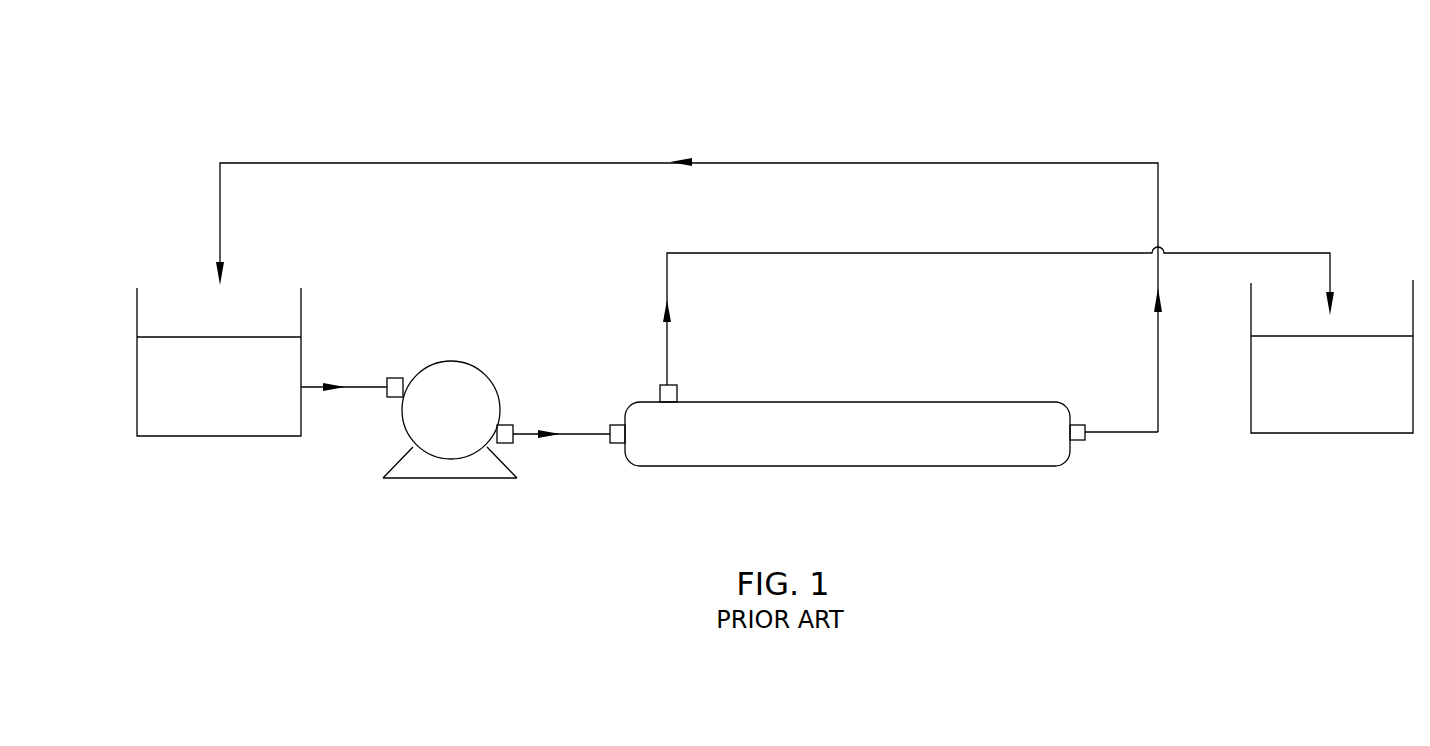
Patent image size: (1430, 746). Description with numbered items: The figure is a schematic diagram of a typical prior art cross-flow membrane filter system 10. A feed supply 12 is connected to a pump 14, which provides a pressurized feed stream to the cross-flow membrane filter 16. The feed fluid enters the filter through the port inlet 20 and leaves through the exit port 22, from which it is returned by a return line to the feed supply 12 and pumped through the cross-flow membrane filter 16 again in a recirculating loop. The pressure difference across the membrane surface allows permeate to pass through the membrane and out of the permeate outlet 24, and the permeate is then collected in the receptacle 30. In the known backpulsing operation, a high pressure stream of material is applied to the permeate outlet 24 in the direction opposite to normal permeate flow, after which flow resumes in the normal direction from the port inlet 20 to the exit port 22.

The prior art membrane separation system 10 is at (428, 72).
The feed supply 12 is at (302, 325).
The pump 14 is at (450, 361).
The cross-flow membrane filter 16 is at (1038, 402).
The port inlet 20 is at (610, 445).
The exit port 22 is at (1079, 442).
The permeate outlet 24 is at (662, 385).
The receptacle 30 is at (1251, 392).